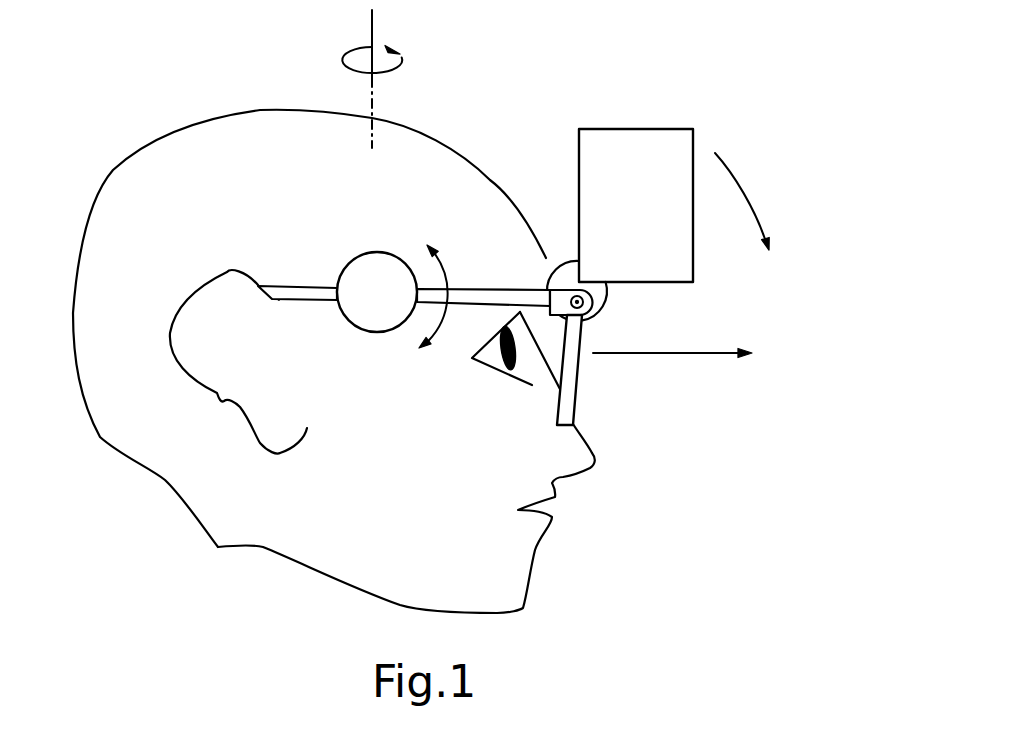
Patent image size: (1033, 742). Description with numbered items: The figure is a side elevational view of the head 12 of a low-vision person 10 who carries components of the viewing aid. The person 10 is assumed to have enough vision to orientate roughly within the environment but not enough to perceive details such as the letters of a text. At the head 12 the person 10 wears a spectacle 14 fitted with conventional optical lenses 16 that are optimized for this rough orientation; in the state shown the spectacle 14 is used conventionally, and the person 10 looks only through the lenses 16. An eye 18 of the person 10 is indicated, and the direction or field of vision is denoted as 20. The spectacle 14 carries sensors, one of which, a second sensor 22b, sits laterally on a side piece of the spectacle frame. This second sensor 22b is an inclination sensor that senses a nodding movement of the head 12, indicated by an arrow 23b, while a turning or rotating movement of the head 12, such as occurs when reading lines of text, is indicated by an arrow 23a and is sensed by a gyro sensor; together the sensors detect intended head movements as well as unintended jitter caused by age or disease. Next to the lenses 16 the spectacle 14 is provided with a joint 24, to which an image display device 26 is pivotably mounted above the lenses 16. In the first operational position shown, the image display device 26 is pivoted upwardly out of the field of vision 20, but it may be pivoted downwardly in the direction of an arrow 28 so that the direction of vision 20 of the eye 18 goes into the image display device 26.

The low-vision person 10 is at (633, 510).
The head 12 is at (222, 153).
The spectacle 14 is at (468, 278).
The optical lenses 16 is at (583, 386).
The eye 18 is at (485, 367).
The direction of vision 20 is at (685, 355).
The second sensor 22b is at (365, 272).
The arrow 23a is at (409, 79).
The arrow 23b is at (447, 320).
The joint 24 is at (575, 297).
The image display device 26 is at (645, 115).
The arrow 28 is at (747, 192).